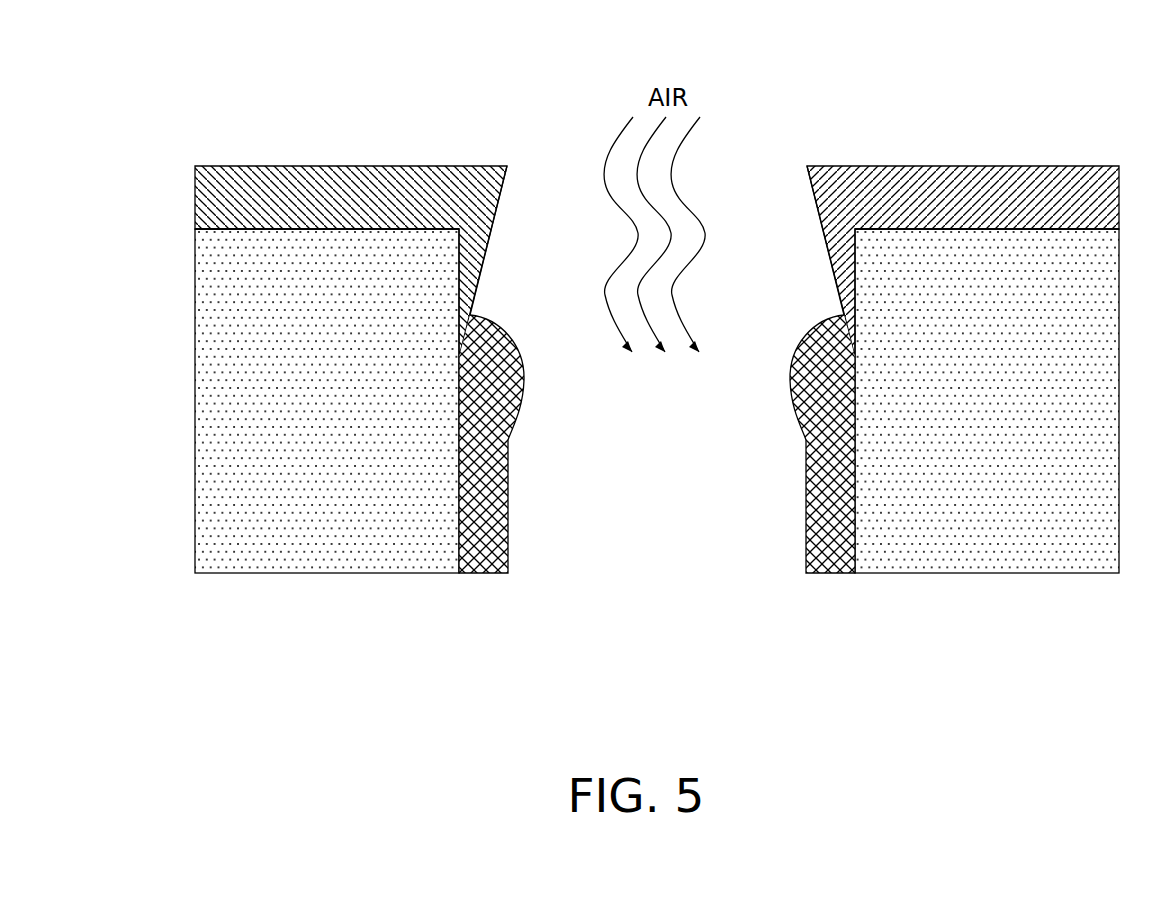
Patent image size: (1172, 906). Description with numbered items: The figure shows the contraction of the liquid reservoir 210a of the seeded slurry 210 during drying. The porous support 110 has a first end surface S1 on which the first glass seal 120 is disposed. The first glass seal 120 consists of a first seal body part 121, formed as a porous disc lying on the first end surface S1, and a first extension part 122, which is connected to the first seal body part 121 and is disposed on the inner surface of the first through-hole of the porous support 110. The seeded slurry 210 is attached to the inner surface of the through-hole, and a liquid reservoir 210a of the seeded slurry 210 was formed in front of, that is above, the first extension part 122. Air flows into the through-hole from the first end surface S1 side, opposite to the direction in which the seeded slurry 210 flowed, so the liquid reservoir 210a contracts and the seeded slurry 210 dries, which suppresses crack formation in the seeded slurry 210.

The porous support 110 is at (363, 553).
The first glass seal 120 is at (657, 185).
The first seal body part 121 is at (470, 265).
The first extension part 122 is at (567, 63).
The seeded slurry 210 is at (657, 489).
The liquid reservoir 210a is at (512, 370).
The first end surface S1 is at (298, 222).